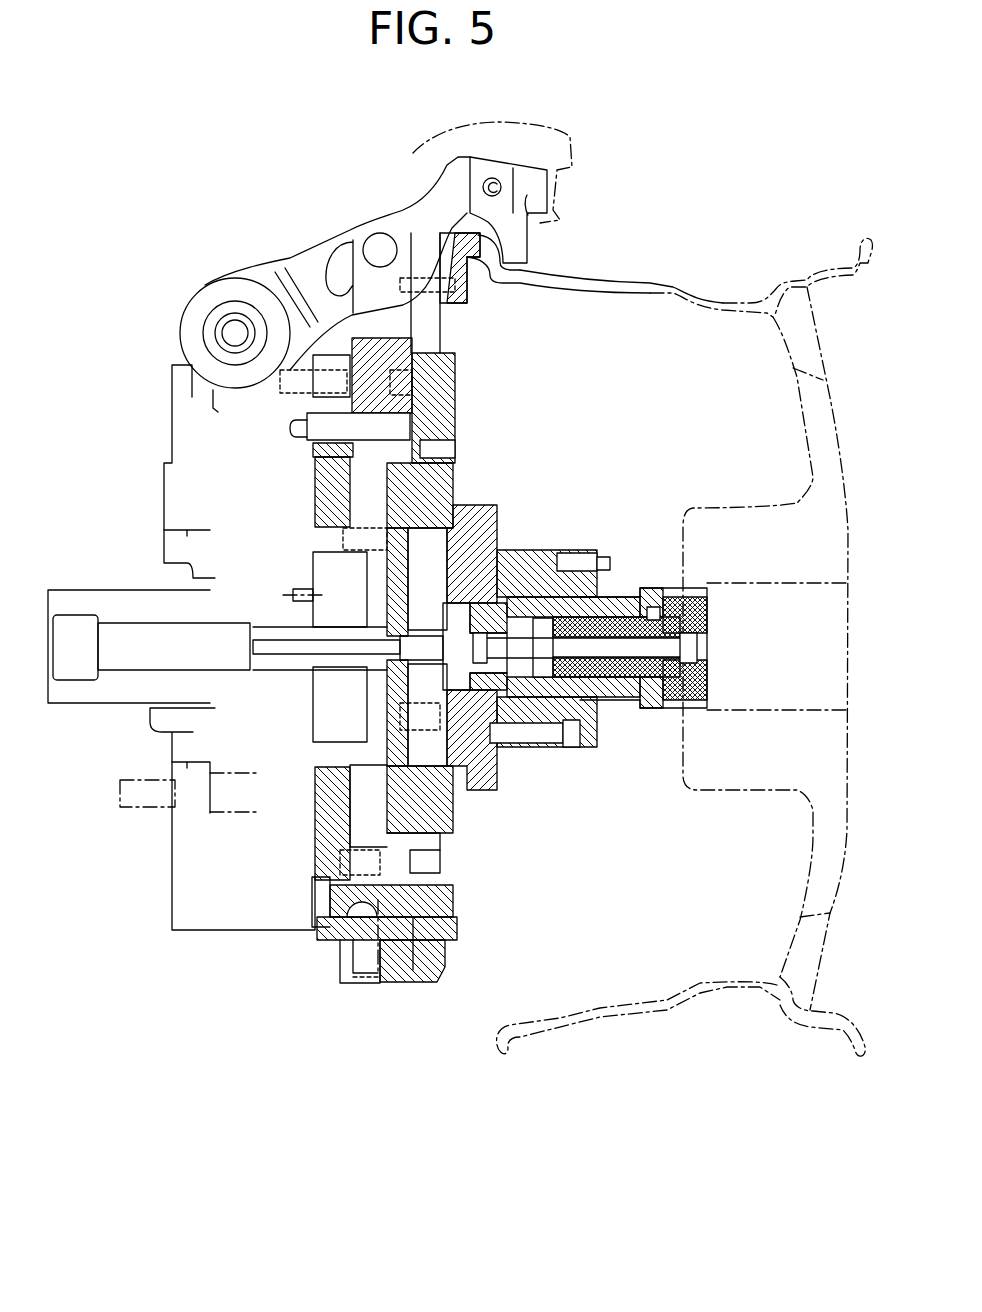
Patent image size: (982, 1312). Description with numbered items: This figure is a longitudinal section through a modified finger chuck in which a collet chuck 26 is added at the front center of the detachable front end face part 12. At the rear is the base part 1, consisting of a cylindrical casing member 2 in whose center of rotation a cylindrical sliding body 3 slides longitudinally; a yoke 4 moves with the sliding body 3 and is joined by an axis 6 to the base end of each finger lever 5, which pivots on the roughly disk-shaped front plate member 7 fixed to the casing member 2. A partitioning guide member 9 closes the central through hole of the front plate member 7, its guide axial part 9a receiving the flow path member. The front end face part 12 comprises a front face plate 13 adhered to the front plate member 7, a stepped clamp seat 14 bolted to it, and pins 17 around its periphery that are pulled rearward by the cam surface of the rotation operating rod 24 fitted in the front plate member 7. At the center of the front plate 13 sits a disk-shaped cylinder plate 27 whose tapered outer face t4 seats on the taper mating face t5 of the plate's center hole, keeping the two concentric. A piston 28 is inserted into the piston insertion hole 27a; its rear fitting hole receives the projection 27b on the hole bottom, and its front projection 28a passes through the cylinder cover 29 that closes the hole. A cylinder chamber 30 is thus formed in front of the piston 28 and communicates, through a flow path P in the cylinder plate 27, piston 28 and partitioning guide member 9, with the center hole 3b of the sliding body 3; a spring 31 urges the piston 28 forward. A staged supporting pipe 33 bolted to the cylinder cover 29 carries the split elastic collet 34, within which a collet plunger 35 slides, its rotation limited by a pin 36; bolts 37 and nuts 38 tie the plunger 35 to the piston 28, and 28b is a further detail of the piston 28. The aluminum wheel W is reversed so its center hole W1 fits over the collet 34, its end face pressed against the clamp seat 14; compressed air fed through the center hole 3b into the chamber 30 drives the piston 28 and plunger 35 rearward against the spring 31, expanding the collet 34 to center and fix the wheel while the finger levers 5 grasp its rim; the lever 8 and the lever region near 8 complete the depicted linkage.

The base part 1 is at (405, 1085).
The cylindrical casing member 2 is at (228, 920).
The cylindrical sliding body 3 is at (98, 597).
The center hole 3b is at (135, 648).
The yoke 4 is at (257, 390).
The finger lever 5 is at (317, 260).
The axis 6 is at (227, 330).
The front plate member 7 is at (453, 357).
The lever 8 is at (368, 252).
The partitioning guide member 9 is at (430, 667).
The guide axial part 9a is at (342, 627).
The front end face part 12 is at (513, 995).
The front face plate 13 is at (440, 957).
The clamp seat 14 is at (468, 300).
The pin 17 is at (445, 900).
The rotation operating rod 24 is at (340, 985).
The collet chuck 26 is at (598, 440).
The cylinder plate 27 is at (450, 470).
The piston insertion hole 27a is at (313, 562).
The projection 27b is at (347, 775).
The piston 28 is at (452, 547).
The projection 28a is at (507, 632).
The housing bolt 28b is at (493, 767).
The cylinder cover 29 is at (505, 798).
The cylinder chamber 30 is at (447, 762).
The spring 31 is at (440, 692).
The staged supporting pipe 33 is at (543, 628).
The collet 34 is at (663, 708).
The collet plunger 35 is at (708, 681).
The pin 36 is at (650, 605).
The bolt 37 is at (693, 648).
The nut 38 is at (585, 543).
The tapered face t4 is at (413, 455).
The taper mating face t5 is at (411, 835).
The flow path P is at (277, 647).
The aluminum wheel W is at (658, 1013).
The center hole W1 is at (815, 590).